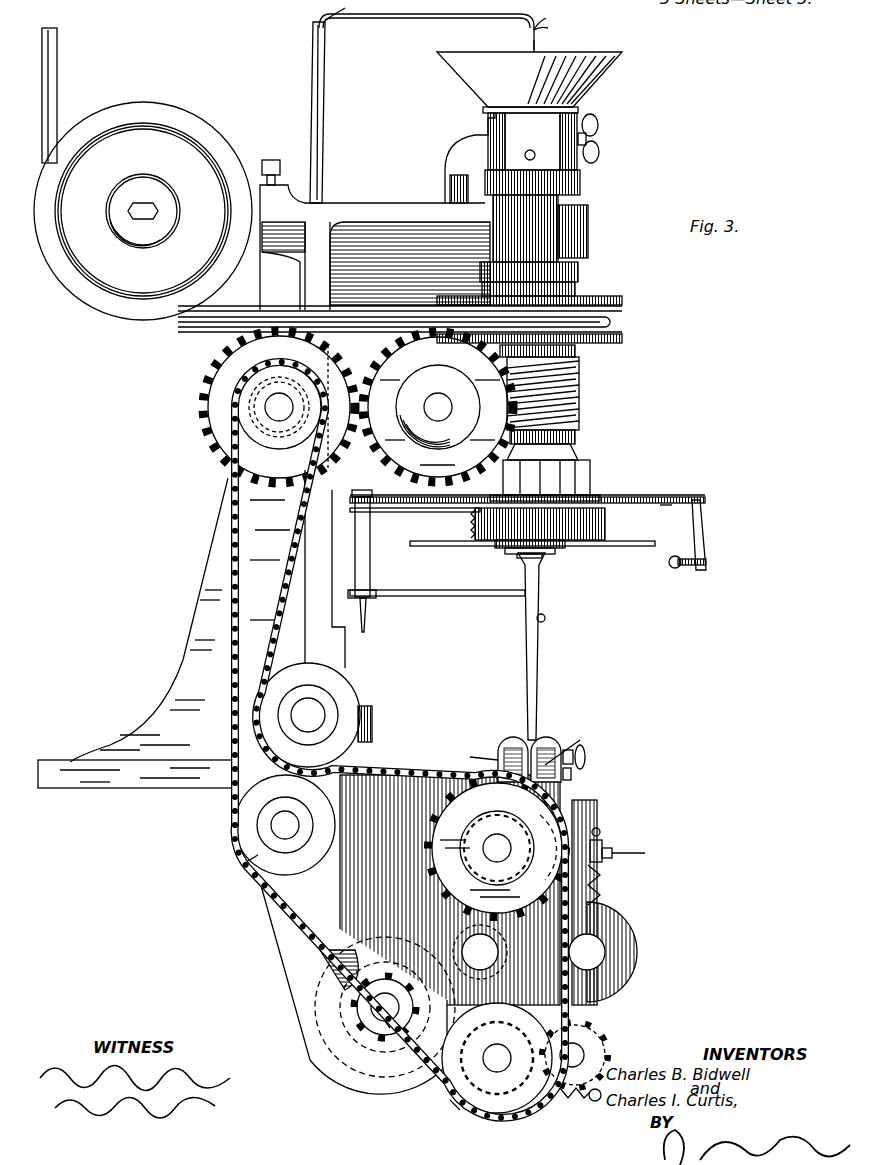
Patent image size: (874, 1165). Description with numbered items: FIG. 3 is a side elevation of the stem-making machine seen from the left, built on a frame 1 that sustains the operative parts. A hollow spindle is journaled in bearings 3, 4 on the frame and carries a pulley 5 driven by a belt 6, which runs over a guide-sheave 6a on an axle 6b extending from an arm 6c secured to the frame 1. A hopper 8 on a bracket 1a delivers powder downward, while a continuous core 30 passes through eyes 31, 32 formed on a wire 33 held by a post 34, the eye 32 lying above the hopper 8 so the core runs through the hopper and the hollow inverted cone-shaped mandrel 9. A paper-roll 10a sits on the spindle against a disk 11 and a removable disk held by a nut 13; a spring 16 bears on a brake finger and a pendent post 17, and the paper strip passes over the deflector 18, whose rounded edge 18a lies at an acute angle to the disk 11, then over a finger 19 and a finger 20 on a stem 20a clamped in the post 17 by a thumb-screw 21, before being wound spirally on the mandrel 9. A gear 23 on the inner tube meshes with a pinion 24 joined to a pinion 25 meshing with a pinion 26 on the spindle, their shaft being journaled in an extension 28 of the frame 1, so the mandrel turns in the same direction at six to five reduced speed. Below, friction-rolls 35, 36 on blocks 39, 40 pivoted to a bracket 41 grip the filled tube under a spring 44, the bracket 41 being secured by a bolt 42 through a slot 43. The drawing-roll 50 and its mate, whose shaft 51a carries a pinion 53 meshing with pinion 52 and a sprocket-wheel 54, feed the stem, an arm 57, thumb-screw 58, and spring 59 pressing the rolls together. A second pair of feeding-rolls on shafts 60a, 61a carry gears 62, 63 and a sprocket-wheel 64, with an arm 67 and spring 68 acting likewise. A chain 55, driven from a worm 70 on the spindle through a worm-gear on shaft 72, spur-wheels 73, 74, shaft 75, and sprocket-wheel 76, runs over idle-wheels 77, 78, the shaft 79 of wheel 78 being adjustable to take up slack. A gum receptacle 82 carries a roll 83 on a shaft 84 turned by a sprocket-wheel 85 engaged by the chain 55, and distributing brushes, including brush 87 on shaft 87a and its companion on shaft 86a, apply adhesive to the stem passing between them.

The frame 1 is at (345, 200).
The bracket 1a is at (592, 118).
The bearing 3 is at (590, 483).
The bearing 4 is at (590, 205).
The pulley 5 is at (622, 340).
The belt 6 is at (610, 322).
The guide-sheave 6a is at (112, 318).
The axle 6b is at (153, 211).
The arm 6c is at (268, 160).
The hopper or funnel 8 is at (529, 79).
The tube or mandrel 9 is at (537, 668).
The paper-roll 10a is at (500, 525).
The disk or extension 11 is at (665, 495).
The nut 13 is at (570, 556).
The spring 16 is at (410, 512).
The pendent post or abutment 17 is at (372, 570).
The guide and deflector 18 is at (706, 533).
The inclined rounded edge 18a is at (695, 520).
The finger 19 is at (672, 568).
The finger 20 is at (545, 618).
The bar or stem 20a is at (465, 598).
The thumb-screw 21 is at (365, 625).
The pinion or gear 23 is at (580, 182).
The pinion 24 is at (505, 170).
The pinion 25 is at (578, 270).
The pinion 26 is at (482, 286).
The extension 28 is at (510, 212).
The core or thread 30 is at (533, 40).
The guide or eye 31 is at (340, 10).
The guide or eye 32 is at (551, 22).
The wire 33 is at (426, 25).
The post 34 is at (303, 112).
The friction-roll 35 is at (500, 746).
The friction-roll 36 is at (550, 740).
The block 39 is at (472, 754).
The block 40 is at (571, 744).
The bracket 41 is at (450, 890).
The bolt 42 is at (372, 720).
The slot 43 is at (586, 757).
The spring 44 is at (571, 776).
The friction drawing-roll 50 is at (546, 847).
The shaft 51a is at (497, 848).
The pinion 52 is at (602, 845).
The pinion 53 is at (507, 830).
The sprocket-wheel 54 is at (497, 848).
The chain 55 is at (395, 770).
The arm 57 is at (639, 854).
The thumb-screw 58 is at (600, 830).
The spring 59 is at (600, 895).
The shaft 60a is at (580, 1050).
The shaft 61a is at (499, 1058).
The gear 62 is at (600, 1048).
The gear 63 is at (497, 1058).
The sprocket-wheel 64 is at (442, 1114).
The arm 67 is at (590, 1100).
The spring 68 is at (562, 1110).
The worm 70 is at (586, 400).
The shaft 72 is at (446, 385).
The spur-wheel 73 is at (420, 358).
The spur-wheel 74 is at (215, 405).
The shaft 75 is at (279, 407).
The sprocket-wheel 76 is at (268, 445).
The idle-wheel 77 is at (250, 851).
The idle-wheel 78 is at (308, 715).
The shaft 79 is at (285, 825).
The receptacle 82 is at (330, 1068).
The roll 83 is at (331, 965).
The shaft 84 is at (385, 1007).
The sprocket-wheel 85 is at (390, 1032).
The shaft 86a is at (480, 952).
The distributing brush or disk 87 is at (637, 955).
The shaft 87a is at (587, 952).